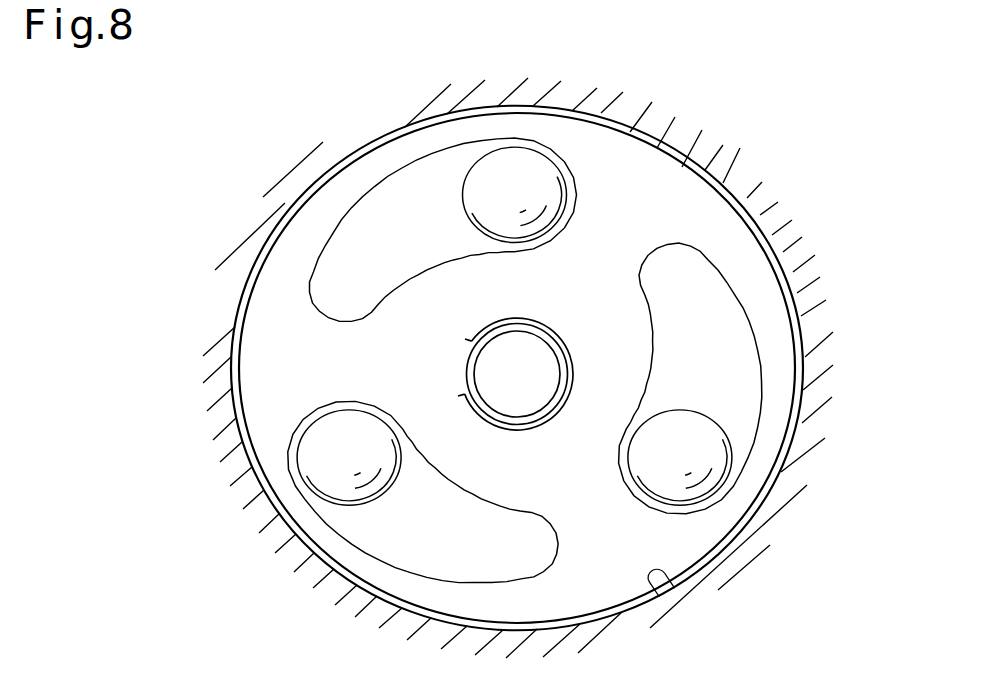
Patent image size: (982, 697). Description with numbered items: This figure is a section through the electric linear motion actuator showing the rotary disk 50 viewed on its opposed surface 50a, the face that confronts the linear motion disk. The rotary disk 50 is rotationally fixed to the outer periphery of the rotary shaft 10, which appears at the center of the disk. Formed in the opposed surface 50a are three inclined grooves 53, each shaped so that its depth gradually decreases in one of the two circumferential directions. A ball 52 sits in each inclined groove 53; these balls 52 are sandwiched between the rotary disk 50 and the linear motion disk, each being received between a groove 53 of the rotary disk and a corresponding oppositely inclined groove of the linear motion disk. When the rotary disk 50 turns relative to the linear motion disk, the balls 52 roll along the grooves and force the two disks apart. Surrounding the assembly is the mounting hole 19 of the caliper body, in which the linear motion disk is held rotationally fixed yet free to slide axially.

The rotary shaft 10 is at (537, 352).
The mounting hole 19 is at (663, 574).
The rotary disk 50 is at (310, 188).
The opposed surface 50a is at (263, 334).
The balls 52 is at (521, 165).
The inclined grooves 53 is at (410, 193).